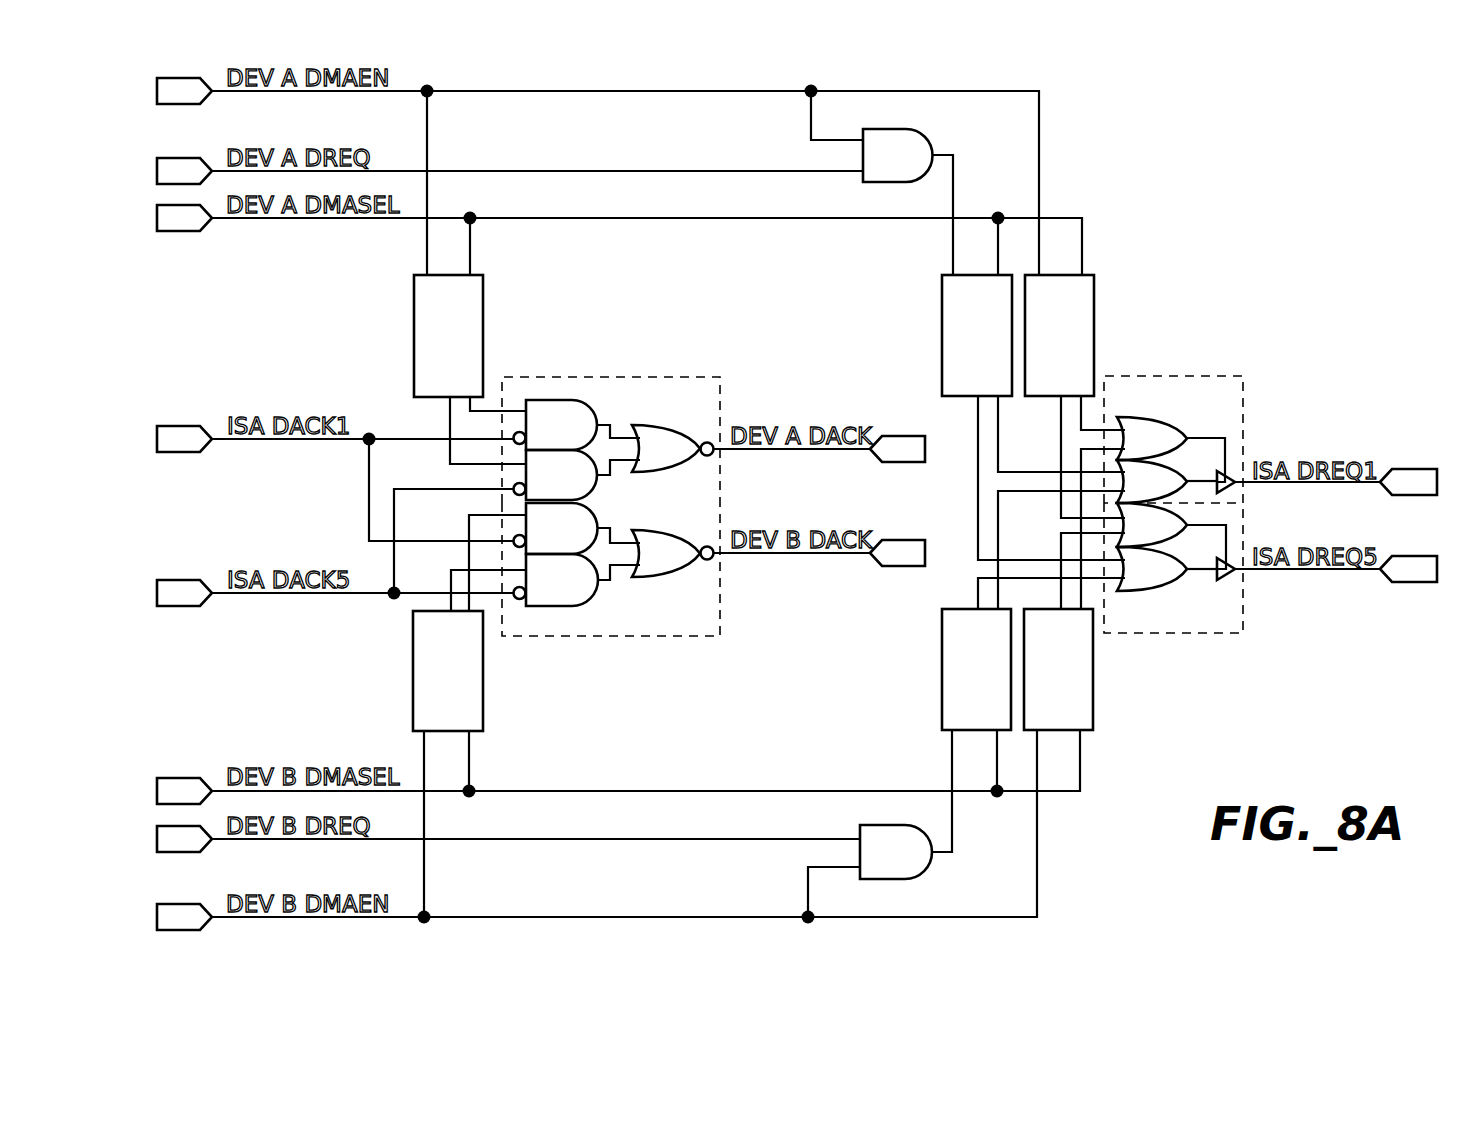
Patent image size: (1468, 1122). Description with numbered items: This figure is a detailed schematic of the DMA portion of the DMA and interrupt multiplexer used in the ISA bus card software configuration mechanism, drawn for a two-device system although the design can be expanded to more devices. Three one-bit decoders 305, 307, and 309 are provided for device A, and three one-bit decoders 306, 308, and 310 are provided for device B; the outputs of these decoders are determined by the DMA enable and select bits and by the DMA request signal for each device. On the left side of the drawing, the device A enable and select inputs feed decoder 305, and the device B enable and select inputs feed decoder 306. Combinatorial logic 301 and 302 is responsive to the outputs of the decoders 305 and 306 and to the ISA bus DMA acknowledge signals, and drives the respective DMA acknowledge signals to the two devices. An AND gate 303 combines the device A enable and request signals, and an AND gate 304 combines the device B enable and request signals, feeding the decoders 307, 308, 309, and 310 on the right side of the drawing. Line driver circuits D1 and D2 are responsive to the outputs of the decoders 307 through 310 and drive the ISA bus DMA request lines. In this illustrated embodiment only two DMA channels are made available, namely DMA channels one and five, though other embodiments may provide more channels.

The combinatorial logic 301 is at (613, 377).
The combinatorial logic 302 is at (607, 637).
The AND gate for device A DMA request 303 is at (918, 130).
The AND gate for device B DMA request 304 is at (915, 879).
The 1-bit decoder 305 is at (483, 332).
The 1-bit decoder 306 is at (483, 688).
The 1-bit decoder 307 is at (942, 325).
The 1-bit decoder 308 is at (942, 690).
The 1-bit decoder 309 is at (1094, 325).
The 1-bit decoder 310 is at (1093, 690).
The line driver circuit D1 is at (1175, 376).
The line driver circuit D2 is at (1175, 633).